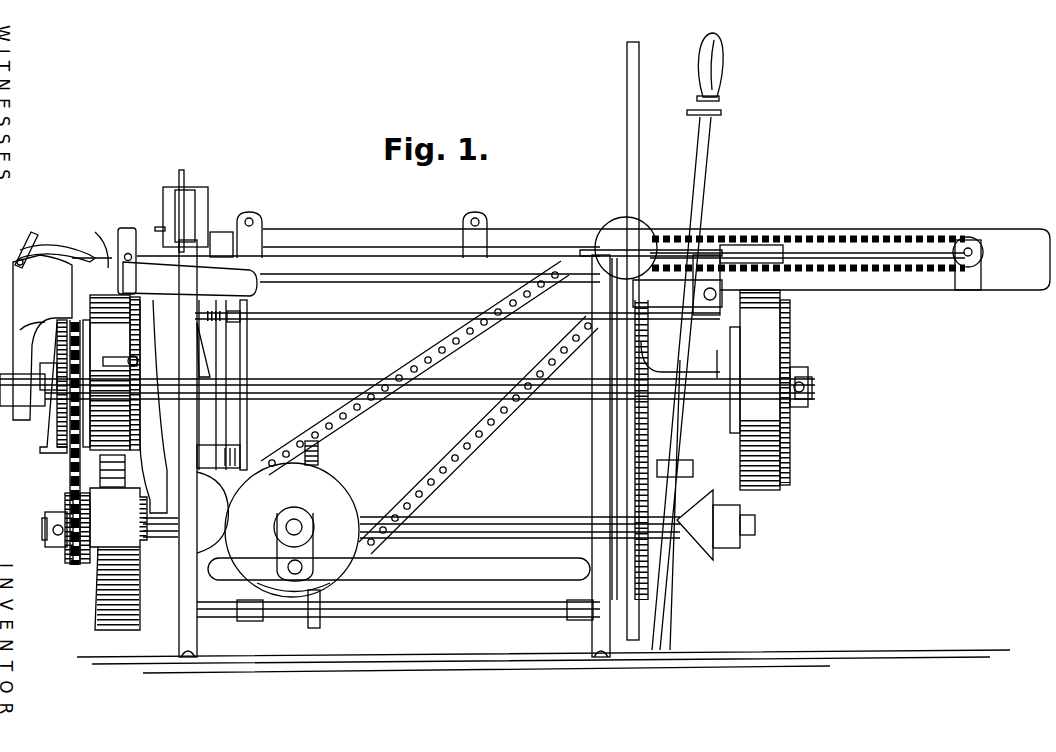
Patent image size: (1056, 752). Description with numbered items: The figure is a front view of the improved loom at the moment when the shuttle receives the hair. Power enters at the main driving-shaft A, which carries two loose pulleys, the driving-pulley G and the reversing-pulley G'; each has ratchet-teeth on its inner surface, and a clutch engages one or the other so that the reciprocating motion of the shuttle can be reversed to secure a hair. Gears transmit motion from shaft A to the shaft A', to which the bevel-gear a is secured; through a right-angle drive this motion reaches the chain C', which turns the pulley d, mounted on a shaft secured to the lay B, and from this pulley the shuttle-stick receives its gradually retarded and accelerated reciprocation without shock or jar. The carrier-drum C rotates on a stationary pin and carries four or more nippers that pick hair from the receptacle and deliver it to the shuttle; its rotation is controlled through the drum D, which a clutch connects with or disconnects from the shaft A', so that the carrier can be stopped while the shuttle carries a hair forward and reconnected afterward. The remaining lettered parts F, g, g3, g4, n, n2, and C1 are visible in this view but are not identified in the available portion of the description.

The lay B is at (593, 251).
The rail rod n2 is at (457, 304).
The main driving-shaft A is at (407, 389).
The shaft A' is at (449, 525).
The carrier-drum C is at (292, 530).
The bevel-gear a is at (323, 454).
The chain C' is at (429, 407).
The pulley d is at (626, 248).
The upright rod g4 is at (640, 192).
The driving-pulley G is at (677, 450).
The reversing-pulley G' is at (769, 390).
The bracket g is at (62, 342).
The lever arm g3 is at (55, 245).
The feed box F is at (187, 262).
The drum C1 is at (128, 404).
The connecting rods n is at (175, 385).
The drum D is at (94, 559).